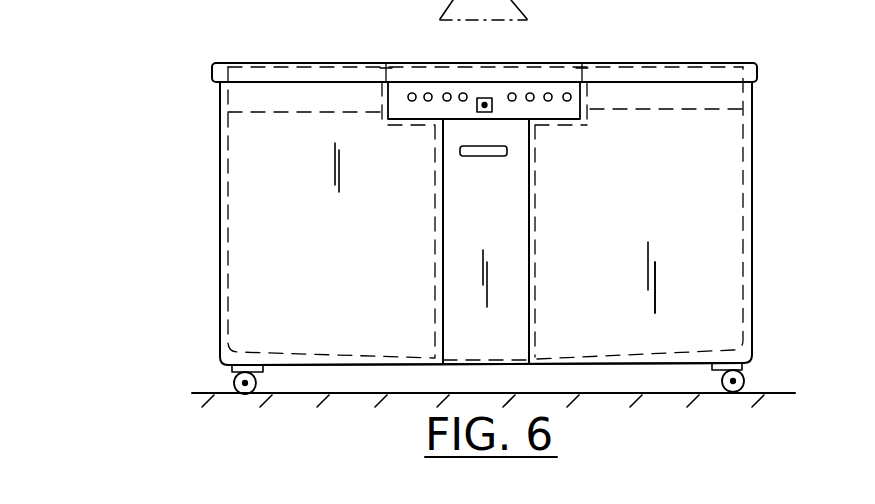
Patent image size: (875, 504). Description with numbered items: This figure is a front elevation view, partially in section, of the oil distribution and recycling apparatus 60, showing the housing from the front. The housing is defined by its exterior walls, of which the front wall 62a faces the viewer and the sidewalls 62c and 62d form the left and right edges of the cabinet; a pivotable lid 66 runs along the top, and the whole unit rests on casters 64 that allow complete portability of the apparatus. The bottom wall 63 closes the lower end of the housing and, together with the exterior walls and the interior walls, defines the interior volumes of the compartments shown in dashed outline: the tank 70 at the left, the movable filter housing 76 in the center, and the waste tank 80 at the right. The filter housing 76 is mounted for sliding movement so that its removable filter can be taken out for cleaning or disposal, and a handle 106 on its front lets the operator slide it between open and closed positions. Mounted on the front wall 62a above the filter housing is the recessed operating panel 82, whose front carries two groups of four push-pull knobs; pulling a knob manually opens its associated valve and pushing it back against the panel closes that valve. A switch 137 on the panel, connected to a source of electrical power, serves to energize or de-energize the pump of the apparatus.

The oil distribution and recycling apparatus 60 is at (210, 71).
The pivotable lid 66 is at (728, 62).
The sidewall 62c is at (220, 201).
The sidewall 62d is at (753, 147).
The front wall 62a is at (657, 283).
The recessed operating panel 82 is at (566, 88).
The switch 137 is at (478, 111).
The handle 106 is at (507, 151).
The tank 70 is at (352, 240).
The movable filter housing 76 is at (498, 237).
The waste tank 80 is at (657, 237).
The bottom wall 63 is at (388, 366).
The casters 64 is at (747, 383).